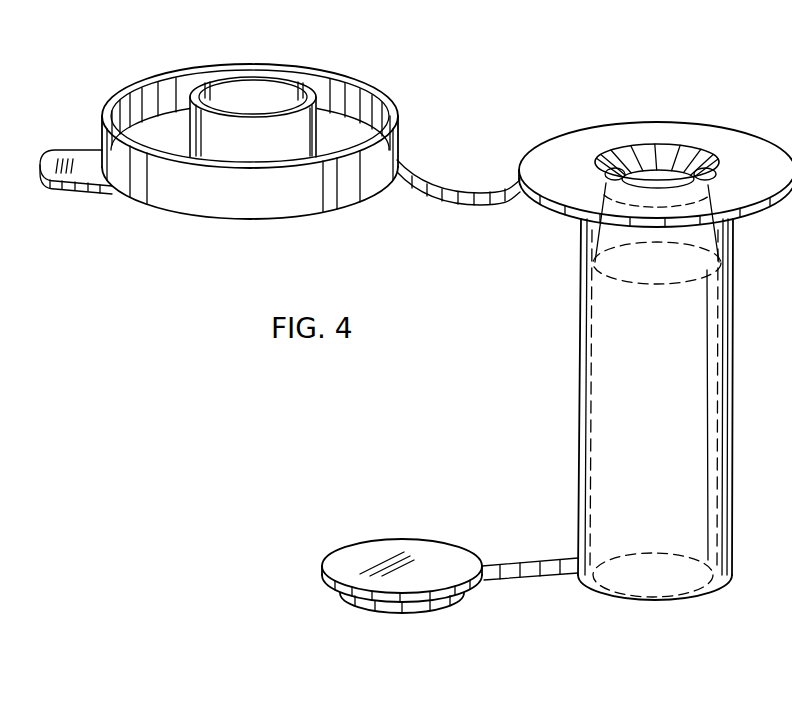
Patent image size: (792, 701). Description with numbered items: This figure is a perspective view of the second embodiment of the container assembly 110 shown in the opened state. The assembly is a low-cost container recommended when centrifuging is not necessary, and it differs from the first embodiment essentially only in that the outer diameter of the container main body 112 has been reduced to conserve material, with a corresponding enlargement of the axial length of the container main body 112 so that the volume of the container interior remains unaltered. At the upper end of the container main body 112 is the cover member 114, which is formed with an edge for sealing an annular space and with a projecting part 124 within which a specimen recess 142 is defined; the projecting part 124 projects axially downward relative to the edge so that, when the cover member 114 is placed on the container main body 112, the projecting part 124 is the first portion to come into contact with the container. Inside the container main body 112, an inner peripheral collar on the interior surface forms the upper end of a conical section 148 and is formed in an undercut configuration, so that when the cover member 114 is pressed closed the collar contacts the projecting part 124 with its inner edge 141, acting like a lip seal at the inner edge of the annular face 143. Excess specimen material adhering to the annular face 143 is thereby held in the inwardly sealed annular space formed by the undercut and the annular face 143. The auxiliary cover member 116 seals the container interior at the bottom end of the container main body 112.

The container assembly 110 is at (640, 103).
The container main body 112 is at (574, 373).
The cover member 114 is at (364, 78).
The auxiliary cover member 116 is at (372, 538).
The projecting part 124 is at (308, 116).
The inner edge 141 is at (620, 178).
The specimen recess 142 is at (248, 86).
The annular face 143 is at (200, 88).
The conical section 148 is at (716, 170).